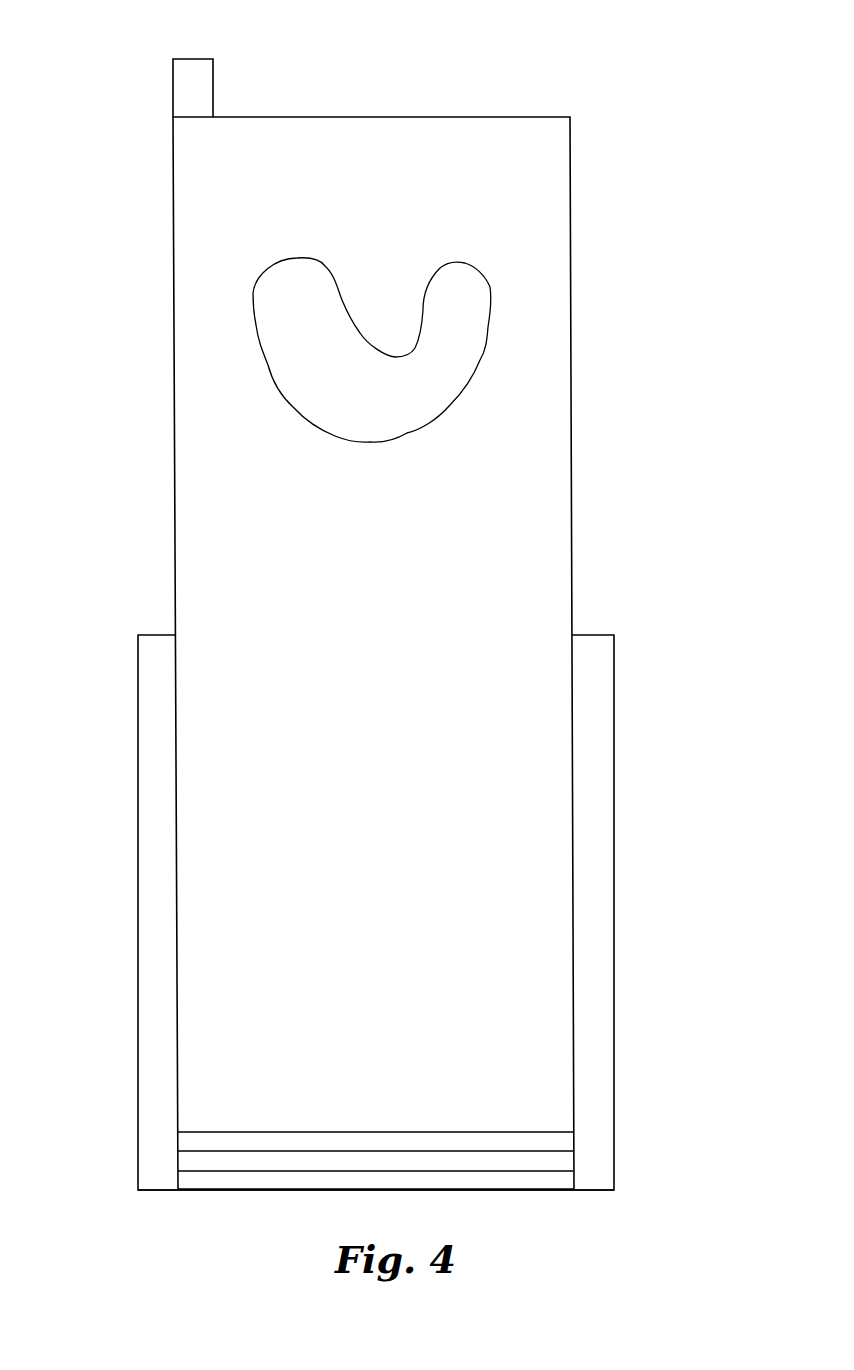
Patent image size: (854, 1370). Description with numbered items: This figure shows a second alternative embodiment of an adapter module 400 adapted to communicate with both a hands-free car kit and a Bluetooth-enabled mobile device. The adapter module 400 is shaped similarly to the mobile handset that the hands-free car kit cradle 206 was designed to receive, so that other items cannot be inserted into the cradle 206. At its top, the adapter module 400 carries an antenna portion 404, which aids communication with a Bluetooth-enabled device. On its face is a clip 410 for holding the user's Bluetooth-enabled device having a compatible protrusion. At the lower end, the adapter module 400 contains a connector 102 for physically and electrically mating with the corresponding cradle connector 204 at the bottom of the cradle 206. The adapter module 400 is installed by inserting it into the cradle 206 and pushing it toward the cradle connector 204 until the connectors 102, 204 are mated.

The adapter module 400 is at (571, 148).
The antenna portion 404 is at (173, 90).
The clip 410 is at (490, 324).
The hands-free car kit cradle 206 is at (614, 705).
The connector 102 is at (575, 1140).
The cradle connector 204 is at (180, 1182).